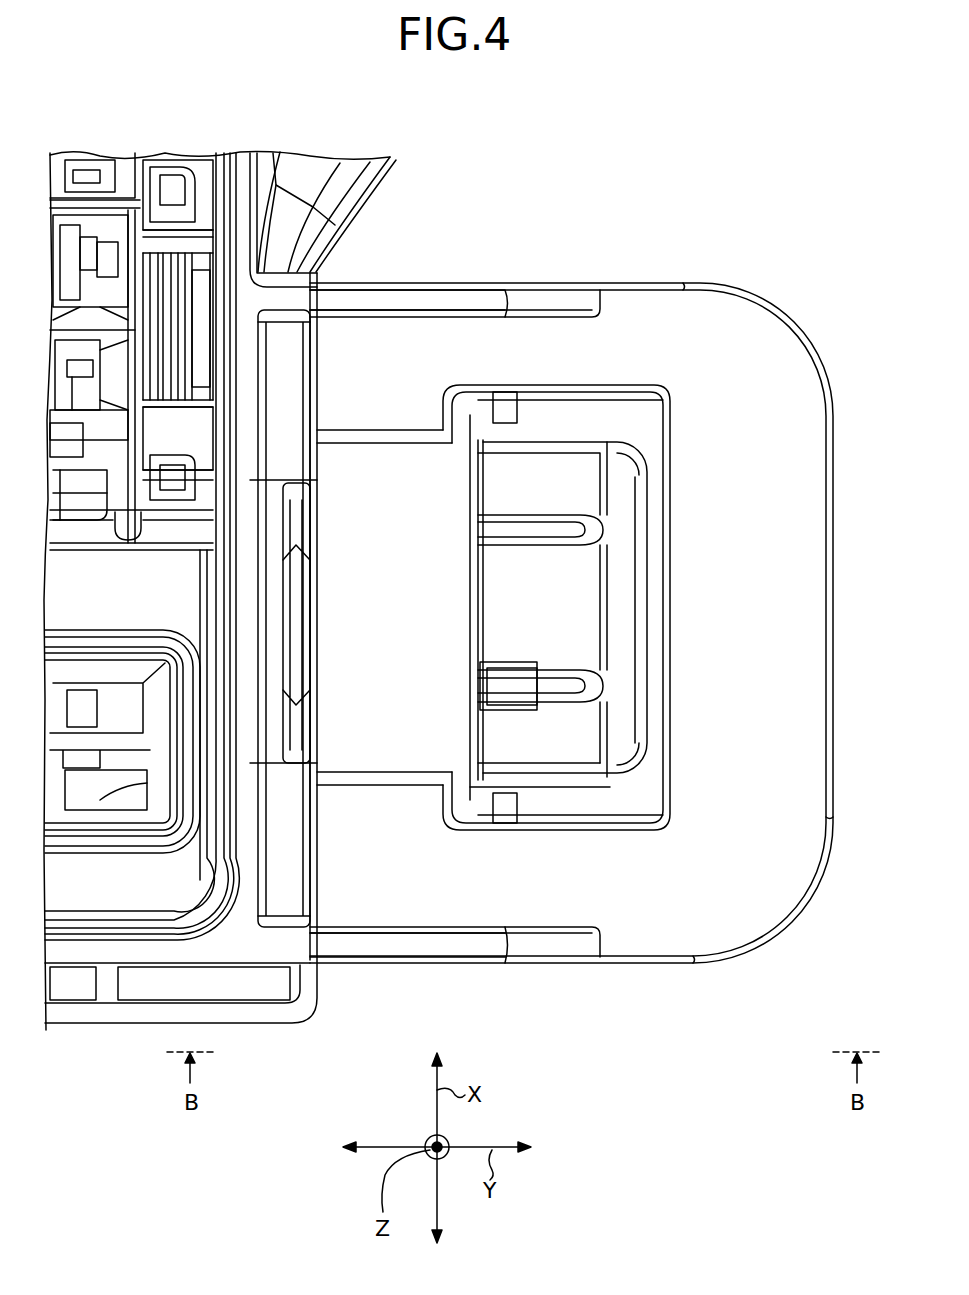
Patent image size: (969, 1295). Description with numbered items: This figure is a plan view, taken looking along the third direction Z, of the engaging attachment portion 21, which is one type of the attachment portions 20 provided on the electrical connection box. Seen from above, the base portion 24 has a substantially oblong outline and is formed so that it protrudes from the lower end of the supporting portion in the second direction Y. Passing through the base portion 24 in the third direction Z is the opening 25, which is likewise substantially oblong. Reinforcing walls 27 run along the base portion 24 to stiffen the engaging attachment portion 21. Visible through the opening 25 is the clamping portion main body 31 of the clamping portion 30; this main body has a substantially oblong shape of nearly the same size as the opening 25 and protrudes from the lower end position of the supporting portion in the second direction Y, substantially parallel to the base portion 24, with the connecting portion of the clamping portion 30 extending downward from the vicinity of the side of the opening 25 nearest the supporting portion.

The attachment portion 20 is at (571, 543).
The engaging attachment portion 21 is at (571, 554).
The base portion 24 is at (752, 347).
The opening 25 is at (657, 487).
The reinforcing wall 27 is at (443, 297).
The clamping portion 30 is at (596, 746).
The clamping portion main body 31 is at (627, 615).